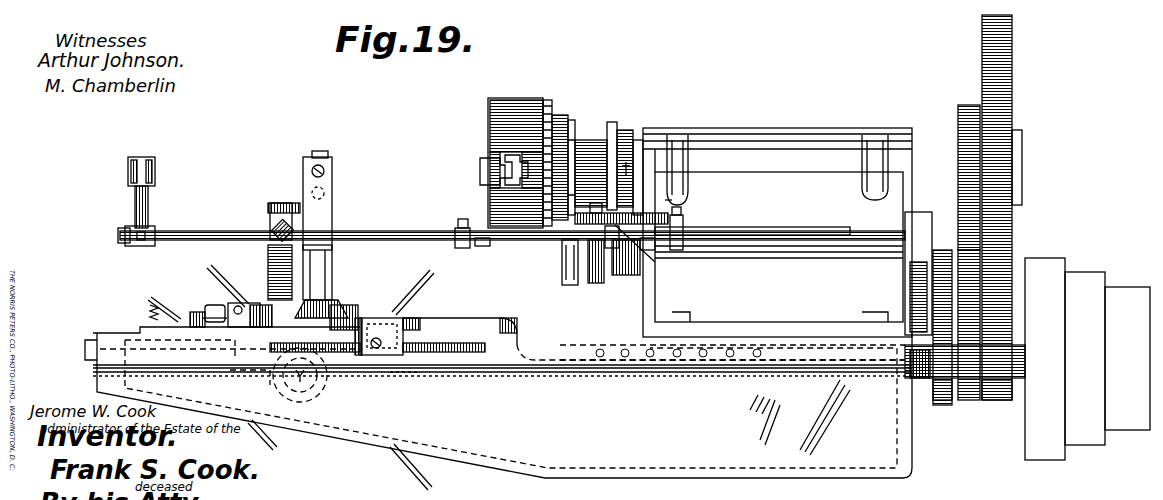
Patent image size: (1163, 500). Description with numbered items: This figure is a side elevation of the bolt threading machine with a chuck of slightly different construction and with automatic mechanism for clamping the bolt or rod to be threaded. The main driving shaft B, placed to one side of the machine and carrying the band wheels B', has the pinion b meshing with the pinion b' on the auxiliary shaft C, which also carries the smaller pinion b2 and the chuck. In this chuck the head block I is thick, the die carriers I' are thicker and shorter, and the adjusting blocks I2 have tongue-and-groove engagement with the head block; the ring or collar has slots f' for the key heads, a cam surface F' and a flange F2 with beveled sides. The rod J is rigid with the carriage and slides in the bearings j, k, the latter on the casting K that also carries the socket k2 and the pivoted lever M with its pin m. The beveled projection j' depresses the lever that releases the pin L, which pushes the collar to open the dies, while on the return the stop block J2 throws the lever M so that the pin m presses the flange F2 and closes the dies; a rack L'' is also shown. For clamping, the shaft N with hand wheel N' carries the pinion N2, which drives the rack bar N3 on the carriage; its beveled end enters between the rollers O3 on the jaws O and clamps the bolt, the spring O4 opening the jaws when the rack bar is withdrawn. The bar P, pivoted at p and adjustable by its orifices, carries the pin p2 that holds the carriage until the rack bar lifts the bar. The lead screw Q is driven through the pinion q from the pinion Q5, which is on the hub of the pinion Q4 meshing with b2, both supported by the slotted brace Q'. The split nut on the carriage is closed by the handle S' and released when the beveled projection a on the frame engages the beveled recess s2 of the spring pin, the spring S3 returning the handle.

The head block I is at (520, 148).
The die carrier I' is at (485, 171).
The adjusting block I2 is at (516, 170).
The cam surface F' is at (588, 155).
The flange F2 is at (595, 173).
The pin m is at (629, 150).
The lever M is at (678, 202).
The rod J is at (762, 234).
The stop block J2 is at (684, 230).
The bearing k is at (640, 240).
The casting K is at (622, 262).
The socket k2 is at (592, 268).
The pin L is at (556, 262).
The rack L'' is at (614, 216).
The bearing j is at (273, 248).
The projection j' is at (484, 257).
The slot f' is at (462, 247).
The jaws O is at (324, 212).
The spring O4 is at (326, 194).
The rollers O3 is at (338, 320).
The beveled projection a is at (400, 352).
The hand wheel N' is at (413, 288).
The pinion N2 is at (405, 380).
The rack bar N3 is at (250, 381).
The shaft N is at (321, 382).
The pin p2 is at (239, 296).
The beveled recess s2 is at (215, 306).
The handle S' is at (166, 302).
The spring S3 is at (143, 309).
The bar P is at (507, 323).
The pivot p is at (677, 358).
The pinion b' is at (1015, 207).
The smaller pinion b2 is at (968, 125).
The auxiliary shaft C is at (1022, 172).
The pinion Q5 is at (940, 250).
The pinion Q4 is at (970, 277).
The slotted brace Q' is at (897, 297).
The lead screw Q is at (920, 391).
The pinion q is at (945, 405).
The pinion b is at (986, 398).
The driving shaft B is at (965, 387).
The band wheels B' is at (1087, 359).